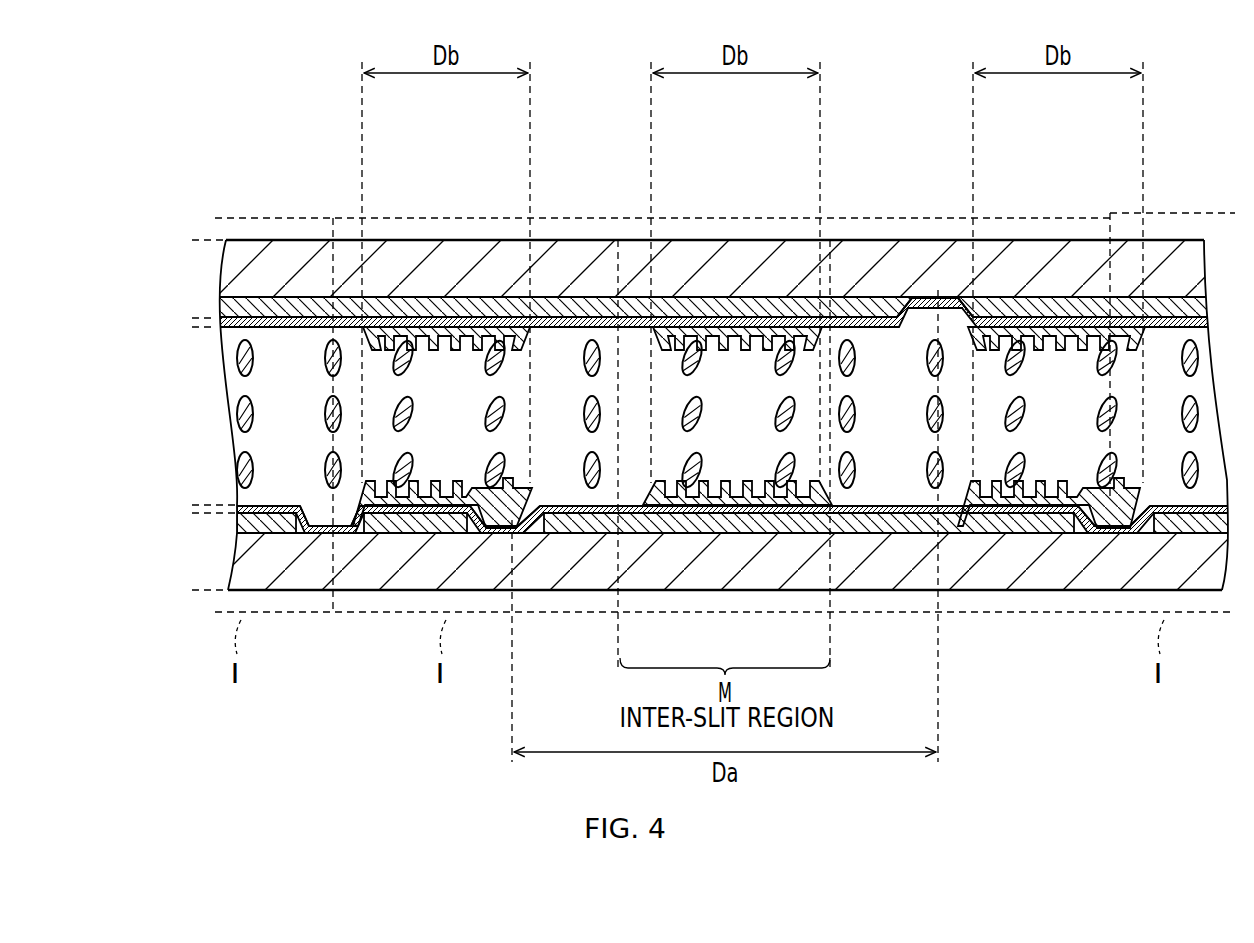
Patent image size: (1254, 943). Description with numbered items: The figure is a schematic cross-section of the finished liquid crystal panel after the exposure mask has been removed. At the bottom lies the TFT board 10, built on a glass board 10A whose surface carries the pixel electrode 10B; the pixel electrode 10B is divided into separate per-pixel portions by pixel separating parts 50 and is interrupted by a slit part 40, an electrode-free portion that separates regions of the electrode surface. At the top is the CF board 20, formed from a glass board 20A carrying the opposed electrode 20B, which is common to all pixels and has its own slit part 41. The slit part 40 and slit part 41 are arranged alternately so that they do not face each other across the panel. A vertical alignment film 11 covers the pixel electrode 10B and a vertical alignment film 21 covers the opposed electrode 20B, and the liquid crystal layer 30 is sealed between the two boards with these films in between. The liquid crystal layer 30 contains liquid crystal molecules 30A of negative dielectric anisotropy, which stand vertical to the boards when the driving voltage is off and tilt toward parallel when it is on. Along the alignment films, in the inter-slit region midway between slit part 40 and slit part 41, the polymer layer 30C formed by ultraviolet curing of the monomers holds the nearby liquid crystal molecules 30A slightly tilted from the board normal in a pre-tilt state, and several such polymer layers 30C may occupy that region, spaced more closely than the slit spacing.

The TFT board 10 is at (200, 513).
The glass board 10A is at (893, 573).
The pixel electrode 10B is at (958, 517).
The vertical alignment film 11 is at (1047, 512).
The CF board 20 is at (200, 240).
The glass board 20A is at (313, 252).
The opposed electrode 20B is at (433, 307).
The vertical alignment film 21 is at (541, 314).
The liquid crystal layer 30 is at (200, 327).
The liquid crystal molecules 30A is at (681, 312).
The polymer layer 30C is at (484, 328).
The slit part 40 is at (497, 549).
The slit part 41 is at (943, 278).
The pixel separating part 50 is at (325, 549).